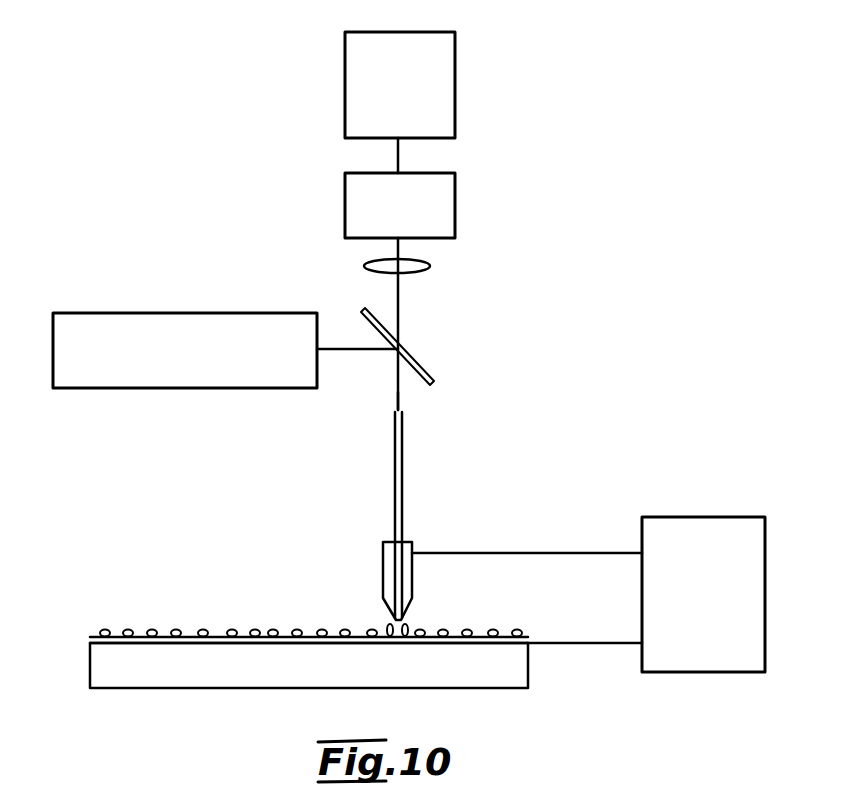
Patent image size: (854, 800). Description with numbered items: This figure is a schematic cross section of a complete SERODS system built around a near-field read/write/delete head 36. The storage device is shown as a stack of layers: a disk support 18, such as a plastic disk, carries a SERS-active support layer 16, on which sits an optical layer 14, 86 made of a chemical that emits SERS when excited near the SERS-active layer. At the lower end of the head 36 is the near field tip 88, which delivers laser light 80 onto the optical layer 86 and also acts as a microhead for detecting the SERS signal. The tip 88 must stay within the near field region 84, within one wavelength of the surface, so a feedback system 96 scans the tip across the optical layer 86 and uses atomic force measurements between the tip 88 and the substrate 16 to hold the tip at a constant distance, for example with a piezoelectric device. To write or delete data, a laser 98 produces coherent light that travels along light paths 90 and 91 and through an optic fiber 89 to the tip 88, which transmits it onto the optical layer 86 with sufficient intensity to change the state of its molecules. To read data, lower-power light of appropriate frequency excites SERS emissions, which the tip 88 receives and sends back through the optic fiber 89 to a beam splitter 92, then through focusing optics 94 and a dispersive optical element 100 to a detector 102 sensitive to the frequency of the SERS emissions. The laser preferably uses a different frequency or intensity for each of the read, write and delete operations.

The detector 102 is at (440, 81).
The dispersive optical element 100 is at (440, 204).
The laser light 80 is at (400, 249).
The focusing optics 94 is at (363, 266).
The beam splitter 92 is at (418, 359).
The light path 91 is at (401, 391).
The light path 90 is at (348, 352).
The laser 98 is at (117, 389).
The optic fiber 89 is at (404, 483).
The probe tip 36 is at (413, 582).
The feedback system 96 is at (690, 518).
The near field tip 88 is at (410, 622).
The near field region 84 is at (368, 623).
The optical layer 14 is at (508, 622).
The optical layer 86 is at (105, 628).
The SERS-active support layer 16 is at (90, 638).
The disk support 18 is at (90, 675).